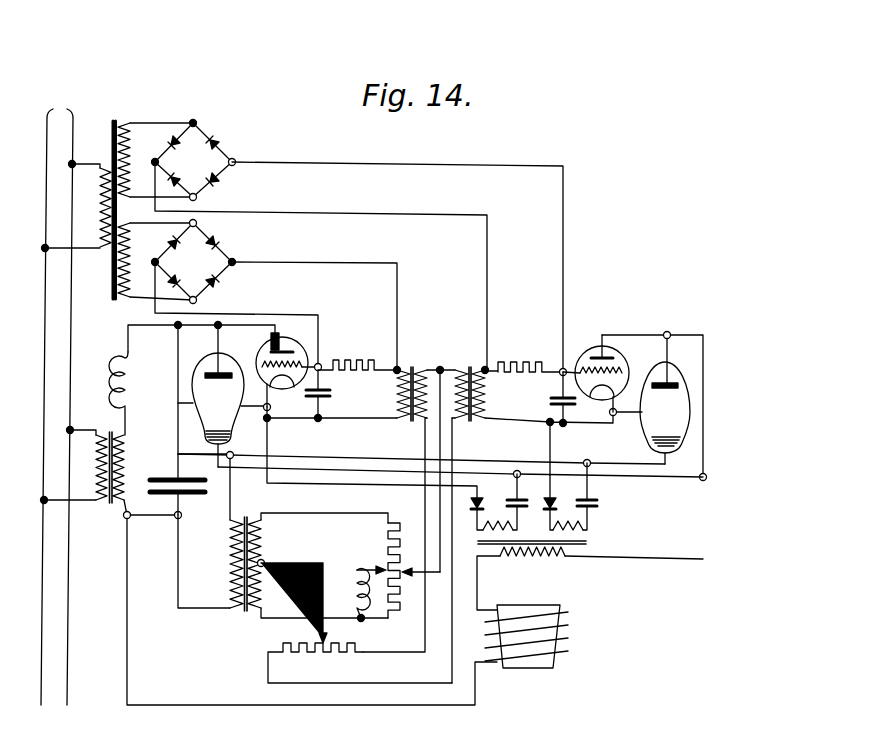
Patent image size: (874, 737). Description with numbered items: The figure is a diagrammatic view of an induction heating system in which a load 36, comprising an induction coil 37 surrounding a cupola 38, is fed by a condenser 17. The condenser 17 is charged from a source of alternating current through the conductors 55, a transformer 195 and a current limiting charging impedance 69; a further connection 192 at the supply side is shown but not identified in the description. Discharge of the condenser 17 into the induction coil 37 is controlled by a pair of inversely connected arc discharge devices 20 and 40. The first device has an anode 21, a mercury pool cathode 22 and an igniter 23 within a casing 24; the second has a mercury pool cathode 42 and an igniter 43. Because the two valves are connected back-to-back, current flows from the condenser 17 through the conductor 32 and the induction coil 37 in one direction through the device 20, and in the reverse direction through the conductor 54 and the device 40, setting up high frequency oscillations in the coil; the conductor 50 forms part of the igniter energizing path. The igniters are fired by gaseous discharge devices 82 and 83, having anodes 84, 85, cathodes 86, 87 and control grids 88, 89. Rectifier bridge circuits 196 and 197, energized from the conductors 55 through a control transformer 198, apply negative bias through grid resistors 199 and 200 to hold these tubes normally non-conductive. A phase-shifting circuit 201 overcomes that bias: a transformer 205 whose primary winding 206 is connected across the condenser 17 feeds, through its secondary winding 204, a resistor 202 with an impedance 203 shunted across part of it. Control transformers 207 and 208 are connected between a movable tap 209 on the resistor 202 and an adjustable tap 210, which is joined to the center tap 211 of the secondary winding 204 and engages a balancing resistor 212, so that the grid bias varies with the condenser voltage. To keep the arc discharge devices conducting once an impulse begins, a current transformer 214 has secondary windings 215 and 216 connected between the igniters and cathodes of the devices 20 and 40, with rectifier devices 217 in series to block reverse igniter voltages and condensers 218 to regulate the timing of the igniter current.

The conductors 55 is at (57, 113).
The control transformer 198 is at (113, 199).
The rectifier bridge circuit 196 is at (199, 159).
The rectifier bridge circuit 197 is at (198, 262).
The supply connection 192 is at (44, 397).
The transformer 195 is at (107, 452).
The current limiting charging impedance 69 is at (133, 385).
The condenser 17 is at (180, 493).
The arc discharge device 20 is at (201, 401).
The anode 21 is at (228, 373).
The igniter 23 is at (230, 430).
The casing 24 is at (174, 405).
The mercury pool cathode 22 is at (216, 440).
The gaseous discharge device 82 is at (302, 357).
The anode 84 is at (276, 325).
The control grid 88 is at (298, 364).
The cathode 86 is at (283, 381).
The grid resistor 199 is at (366, 359).
The control transformer 207 is at (412, 380).
The control transformer 208 is at (466, 380).
The grid resistor 200 is at (526, 362).
The gaseous discharge device 83 is at (608, 368).
The anode 85 is at (604, 354).
The control grid 89 is at (612, 372).
The cathode 87 is at (601, 397).
The arc discharge device 40 is at (665, 404).
The igniter 43 is at (657, 437).
The mercury pool cathode 42 is at (668, 452).
The conductor 50 is at (368, 457).
The conductor 54 is at (648, 477).
The transformer 205 is at (244, 550).
The primary winding 206 is at (233, 562).
The secondary winding 204 is at (256, 556).
The center tap 211 is at (265, 565).
The adjustable tap 210 is at (330, 643).
The phase-shifting circuit 201 is at (375, 564).
The resistor 202 is at (395, 534).
The impedance 203 is at (358, 597).
The movable tap 209 is at (405, 578).
The balancing resistor 212 is at (360, 663).
The conductor 32 is at (318, 706).
The rectifier devices 217 is at (479, 500).
The condensers 218 is at (519, 500).
The secondary winding 215 is at (500, 520).
The secondary winding 216 is at (585, 527).
The current transformer 214 is at (549, 545).
The load 36 is at (544, 645).
The induction coil 37 is at (570, 632).
The cupola 38 is at (540, 670).